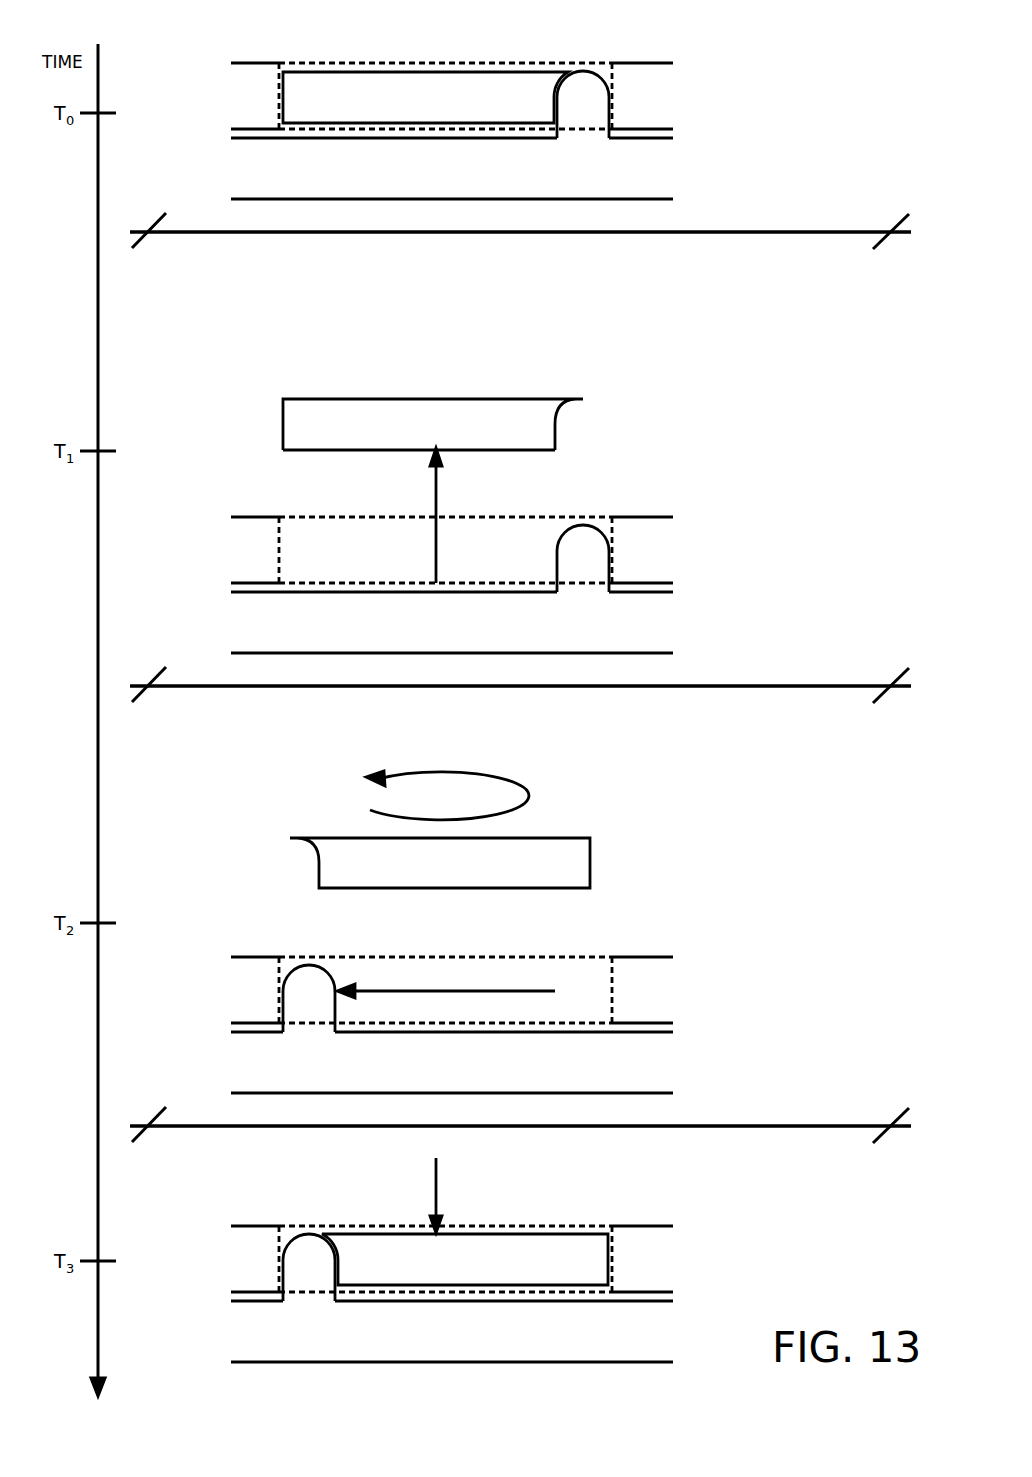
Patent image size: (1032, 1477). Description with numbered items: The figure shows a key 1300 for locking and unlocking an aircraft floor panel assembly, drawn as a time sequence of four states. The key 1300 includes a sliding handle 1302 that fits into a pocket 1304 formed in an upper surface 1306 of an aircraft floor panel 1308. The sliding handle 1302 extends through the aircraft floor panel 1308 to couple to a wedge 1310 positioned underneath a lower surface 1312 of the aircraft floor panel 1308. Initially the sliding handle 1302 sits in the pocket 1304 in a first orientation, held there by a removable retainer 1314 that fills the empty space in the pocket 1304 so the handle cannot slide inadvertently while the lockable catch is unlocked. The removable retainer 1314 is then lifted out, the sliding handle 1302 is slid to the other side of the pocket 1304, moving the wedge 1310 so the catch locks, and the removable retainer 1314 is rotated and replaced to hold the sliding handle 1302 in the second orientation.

The key 1300 is at (712, 46).
The sliding handle 1302 is at (583, 71).
The pocket 1304 is at (350, 58).
The upper surface 1306 is at (262, 58).
The aircraft floor panel 1308 is at (640, 132).
The wedge 1310 is at (636, 199).
The lower surface 1312 is at (250, 138).
The removable retainer 1314 is at (475, 70).